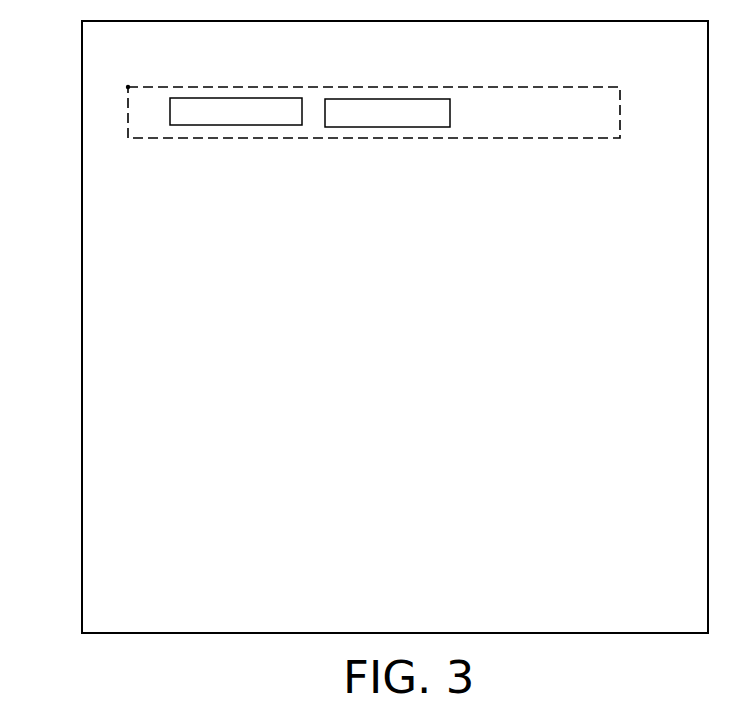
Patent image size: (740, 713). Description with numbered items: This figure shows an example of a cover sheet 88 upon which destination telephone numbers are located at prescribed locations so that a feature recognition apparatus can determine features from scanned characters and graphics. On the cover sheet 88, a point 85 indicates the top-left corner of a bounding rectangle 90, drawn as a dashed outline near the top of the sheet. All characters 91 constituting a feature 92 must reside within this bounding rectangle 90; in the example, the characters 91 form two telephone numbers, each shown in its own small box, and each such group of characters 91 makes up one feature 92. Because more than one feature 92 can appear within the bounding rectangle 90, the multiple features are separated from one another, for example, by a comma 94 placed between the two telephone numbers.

The cover sheet 88 is at (81, 82).
The point 85 is at (128, 87).
The bounding rectangle 90 is at (402, 87).
The characters 91 is at (387, 100).
The feature 92 is at (368, 127).
The comma 94 is at (314, 116).